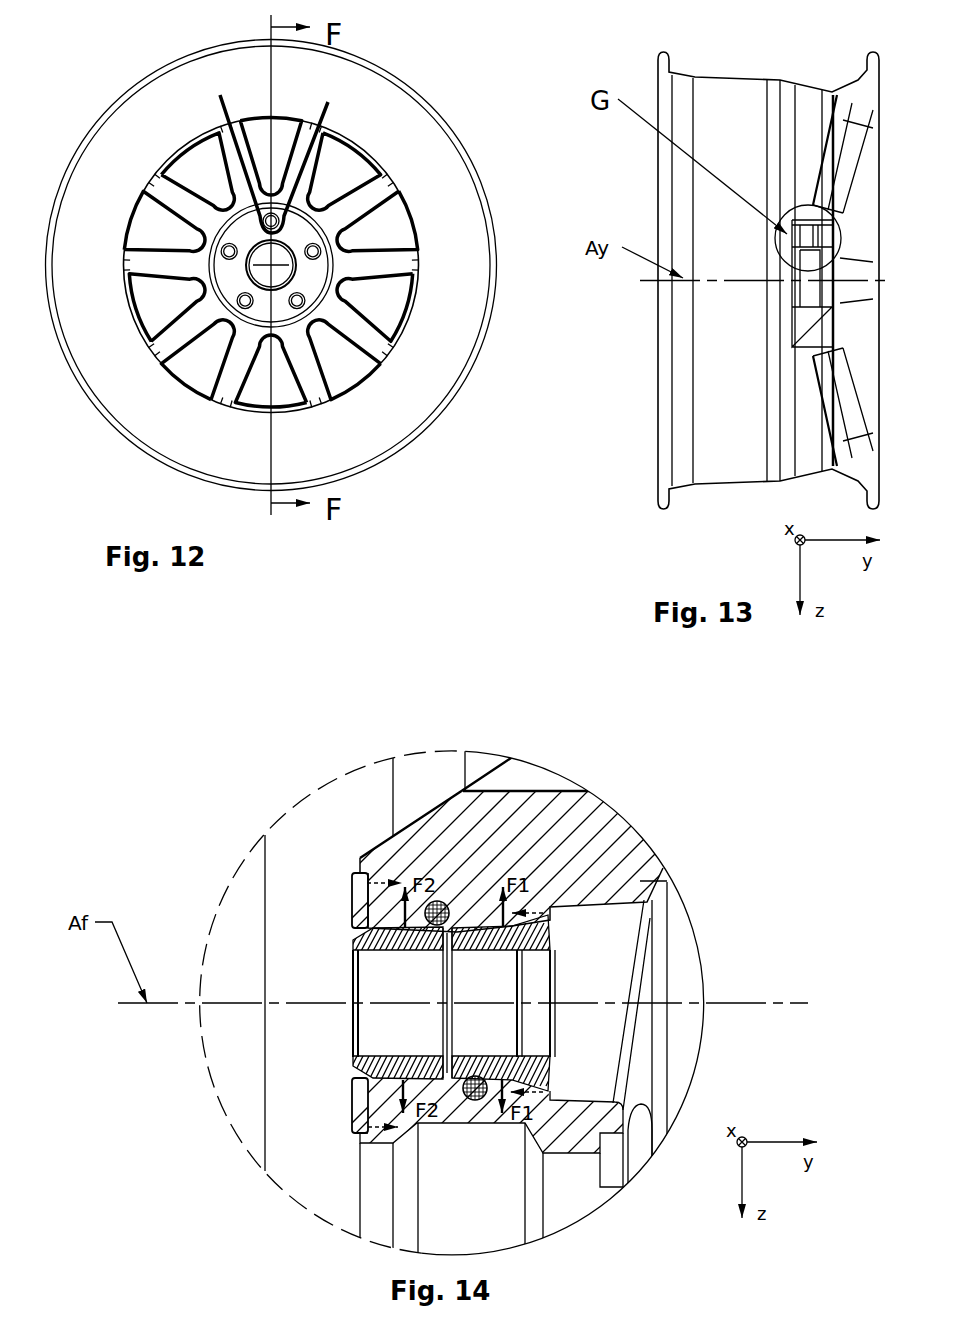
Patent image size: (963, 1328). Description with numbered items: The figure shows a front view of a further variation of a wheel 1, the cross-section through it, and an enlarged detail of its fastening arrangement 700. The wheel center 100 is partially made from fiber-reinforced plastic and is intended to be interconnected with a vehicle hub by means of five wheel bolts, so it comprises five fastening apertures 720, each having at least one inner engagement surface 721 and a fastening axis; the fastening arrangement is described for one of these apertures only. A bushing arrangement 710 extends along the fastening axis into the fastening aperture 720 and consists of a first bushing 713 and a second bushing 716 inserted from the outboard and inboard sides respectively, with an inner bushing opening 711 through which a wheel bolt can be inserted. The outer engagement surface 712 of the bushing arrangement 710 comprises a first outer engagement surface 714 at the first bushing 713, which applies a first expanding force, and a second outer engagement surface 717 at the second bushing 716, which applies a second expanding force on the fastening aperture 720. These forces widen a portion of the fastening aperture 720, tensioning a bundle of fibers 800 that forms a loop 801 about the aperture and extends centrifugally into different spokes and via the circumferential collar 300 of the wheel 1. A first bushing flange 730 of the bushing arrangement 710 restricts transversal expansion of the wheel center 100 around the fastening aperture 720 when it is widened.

In FIG. 12, the wheel 1 is at (110, 80).
In FIG. 13, the wheel 1 is at (820, 60).
In FIG. 12, the wheel center 100 is at (340, 350).
In FIG. 14, the wheel center 100 is at (587, 840).
In FIG. 12, the circumferential collar 300 is at (397, 135).
In FIG. 12, the fastening arrangement 700 is at (230, 327).
In FIG. 13, the fastening arrangement 700 is at (765, 288).
In FIG. 14, the fastening arrangement 700 is at (385, 830).
In FIG. 14, the bushing arrangement 710 is at (337, 1040).
In FIG. 14, the inner bushing opening 711 is at (543, 1008).
In FIG. 14, the outer engagement surface 712 is at (517, 829).
In FIG. 14, the first bushing 713 is at (512, 1068).
In FIG. 14, the first outer engagement surface 714 is at (520, 1072).
In FIG. 14, the second bushing 716 is at (342, 952).
In FIG. 14, the second outer engagement surface 717 is at (368, 1088).
In FIG. 12, the fastening aperture 720 is at (257, 293).
In FIG. 13, the fastening aperture 720 is at (783, 232).
In FIG. 14, the fastening aperture 720 is at (336, 960).
In FIG. 14, the inner engagement surface 721 is at (477, 927).
In FIG. 14, the first bushing flange 730 is at (372, 943).
In FIG. 12, the bundle of fibers 800 is at (218, 102).
In FIG. 14, the bundle of fibers 800 is at (447, 893).
In FIG. 12, the loop 801 is at (232, 208).